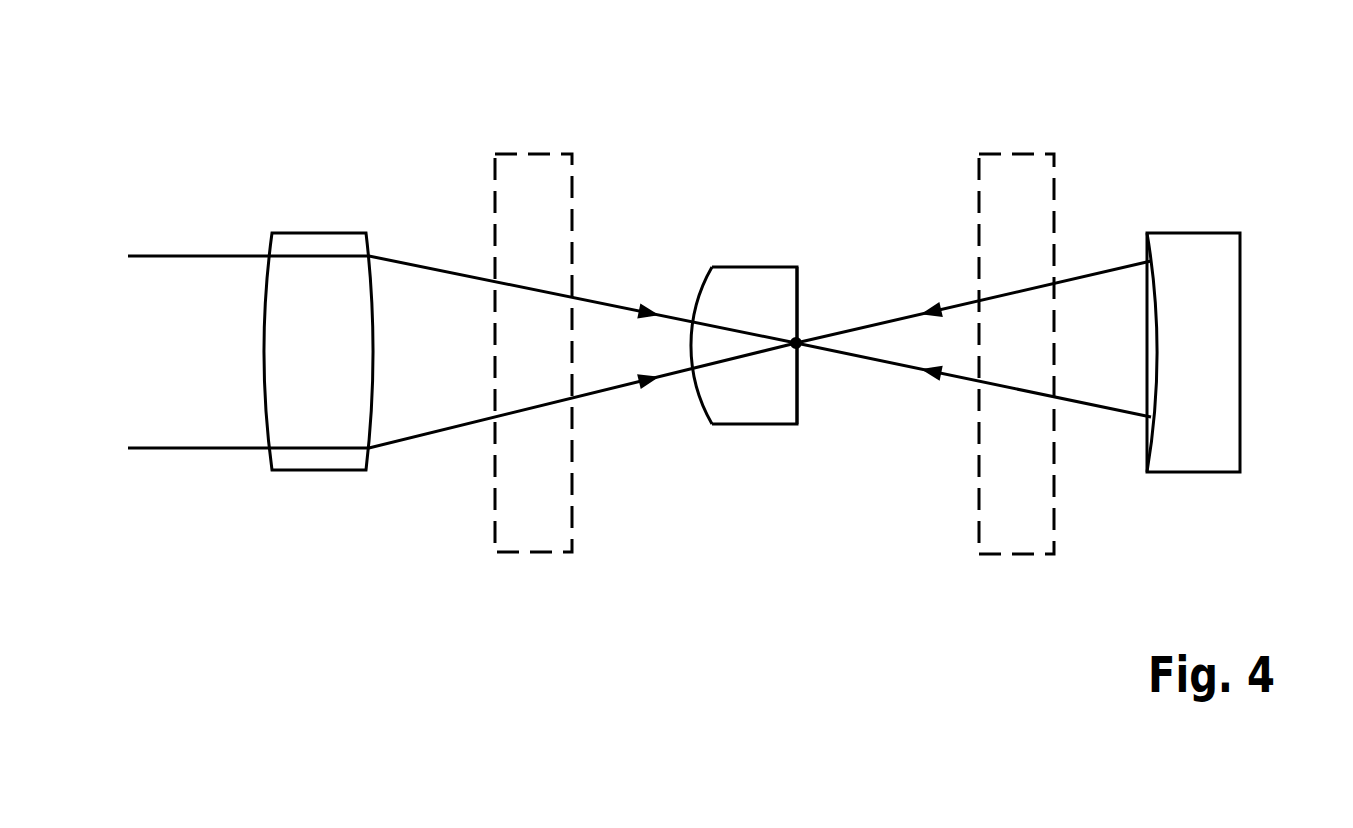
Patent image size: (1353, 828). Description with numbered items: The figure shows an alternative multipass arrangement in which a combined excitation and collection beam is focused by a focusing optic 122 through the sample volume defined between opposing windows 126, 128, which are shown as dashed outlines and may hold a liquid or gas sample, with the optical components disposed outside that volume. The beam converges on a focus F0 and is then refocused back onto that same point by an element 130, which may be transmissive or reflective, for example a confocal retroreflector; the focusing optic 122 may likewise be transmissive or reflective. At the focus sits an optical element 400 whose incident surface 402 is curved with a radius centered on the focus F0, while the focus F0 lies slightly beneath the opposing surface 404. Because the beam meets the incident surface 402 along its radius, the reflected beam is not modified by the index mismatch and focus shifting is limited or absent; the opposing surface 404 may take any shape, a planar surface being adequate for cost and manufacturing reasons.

The focusing optic 122 is at (305, 232).
The window 126 is at (525, 152).
The window 128 is at (1013, 153).
The refocusing element 130 is at (1189, 233).
The optical element 400 is at (759, 296).
The incident surface 402 is at (700, 288).
The opposing surface 404 is at (799, 288).
The focus F0 is at (797, 348).